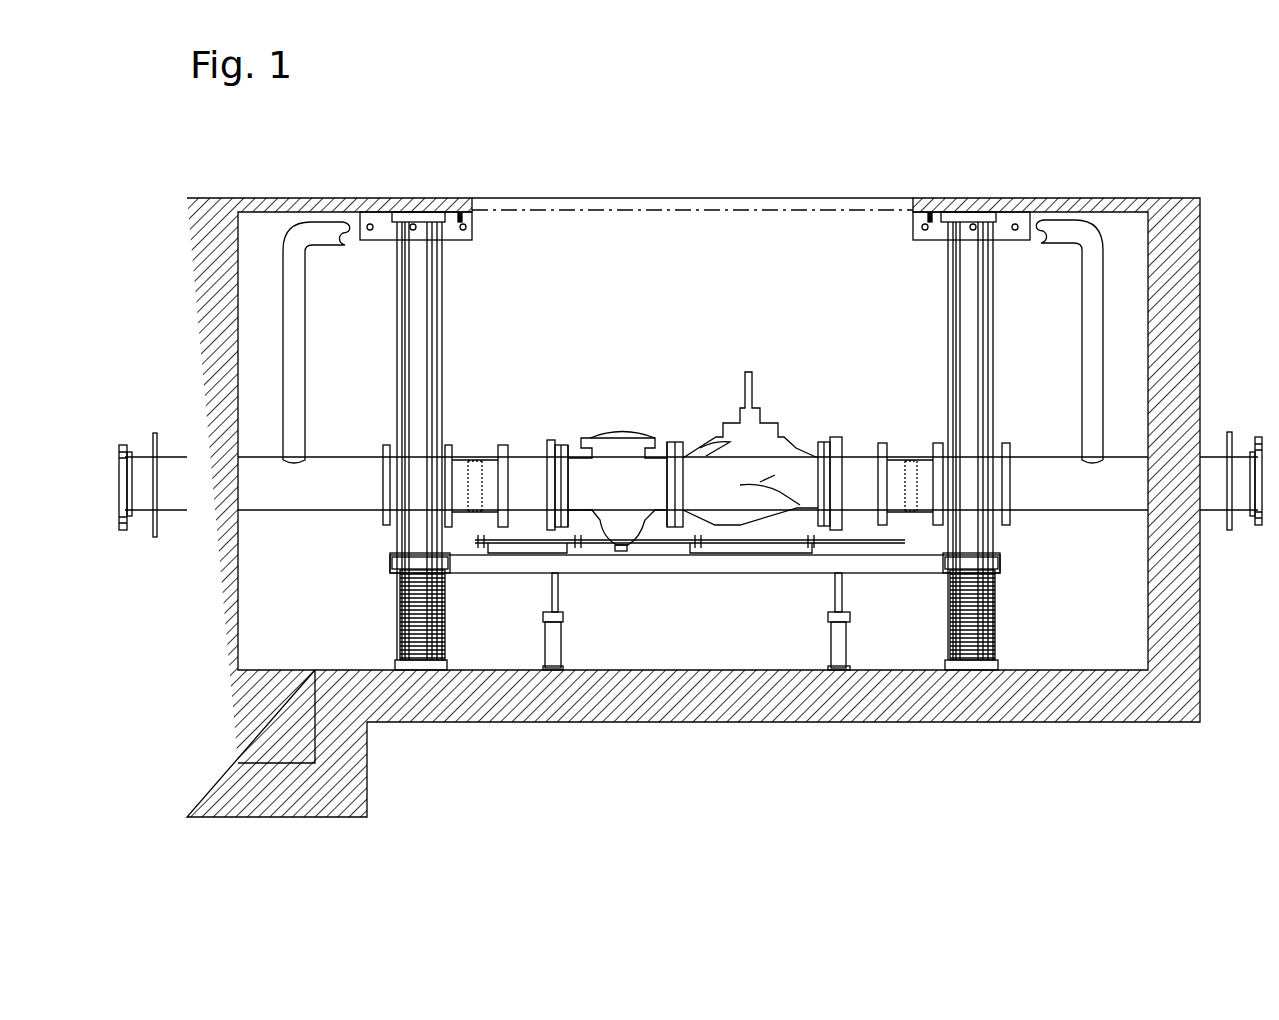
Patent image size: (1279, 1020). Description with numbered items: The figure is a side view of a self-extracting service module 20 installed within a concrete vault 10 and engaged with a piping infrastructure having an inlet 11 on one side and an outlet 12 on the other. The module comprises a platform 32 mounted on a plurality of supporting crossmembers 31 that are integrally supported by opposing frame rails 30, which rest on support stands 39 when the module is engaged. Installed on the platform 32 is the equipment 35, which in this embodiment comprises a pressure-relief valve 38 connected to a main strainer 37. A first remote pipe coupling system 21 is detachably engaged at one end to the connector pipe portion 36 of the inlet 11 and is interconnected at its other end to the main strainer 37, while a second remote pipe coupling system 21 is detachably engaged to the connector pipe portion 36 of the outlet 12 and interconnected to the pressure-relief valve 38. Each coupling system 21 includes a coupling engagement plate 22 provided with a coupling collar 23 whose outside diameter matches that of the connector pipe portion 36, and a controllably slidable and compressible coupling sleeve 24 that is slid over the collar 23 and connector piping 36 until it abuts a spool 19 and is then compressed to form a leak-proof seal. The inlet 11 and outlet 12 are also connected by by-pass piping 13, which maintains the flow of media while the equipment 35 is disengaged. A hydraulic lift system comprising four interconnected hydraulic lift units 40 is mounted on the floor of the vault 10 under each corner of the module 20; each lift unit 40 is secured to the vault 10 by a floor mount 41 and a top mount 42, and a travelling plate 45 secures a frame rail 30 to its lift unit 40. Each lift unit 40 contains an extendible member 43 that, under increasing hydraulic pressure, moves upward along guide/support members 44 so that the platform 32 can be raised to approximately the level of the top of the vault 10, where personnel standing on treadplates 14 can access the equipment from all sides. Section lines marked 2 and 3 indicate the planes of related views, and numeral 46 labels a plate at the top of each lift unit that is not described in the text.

The section line 2- 2 is at (1093, 825).
The section line 3- 3 is at (1250, 262).
The concrete vault 10 is at (208, 200).
The piping infrastructure inlet 11 is at (320, 515).
The piping infrastructure outlet 12 is at (1125, 508).
The by-pass piping 13 is at (292, 442).
The treadplates 14 is at (414, 198).
The spool 19 is at (440, 445).
The self-extracting service module 20 is at (745, 590).
The remote pipe coupling system 21 is at (508, 428).
The coupling engagement plate 22 is at (562, 443).
The coupling collar 23 is at (551, 440).
The coupling sleeve 24 is at (472, 445).
The frame rails 30 is at (628, 556).
The supporting crossmembers 31 is at (578, 556).
The platform 32 is at (668, 553).
The equipment 35 is at (692, 370).
The connector pipe portion 36 is at (452, 512).
The main strainer 37 is at (628, 432).
The pressure-relief valve 38 is at (744, 372).
The support stands 39 is at (845, 655).
The hydraulic lift unit 40 is at (718, 496).
The floor mount 41 is at (398, 670).
The top mount 42 is at (388, 222).
The extendible member 43 is at (447, 642).
The guide/support members 44 is at (992, 243).
The travelling plate 45 is at (448, 566).
The hanger plate 46 is at (360, 228).